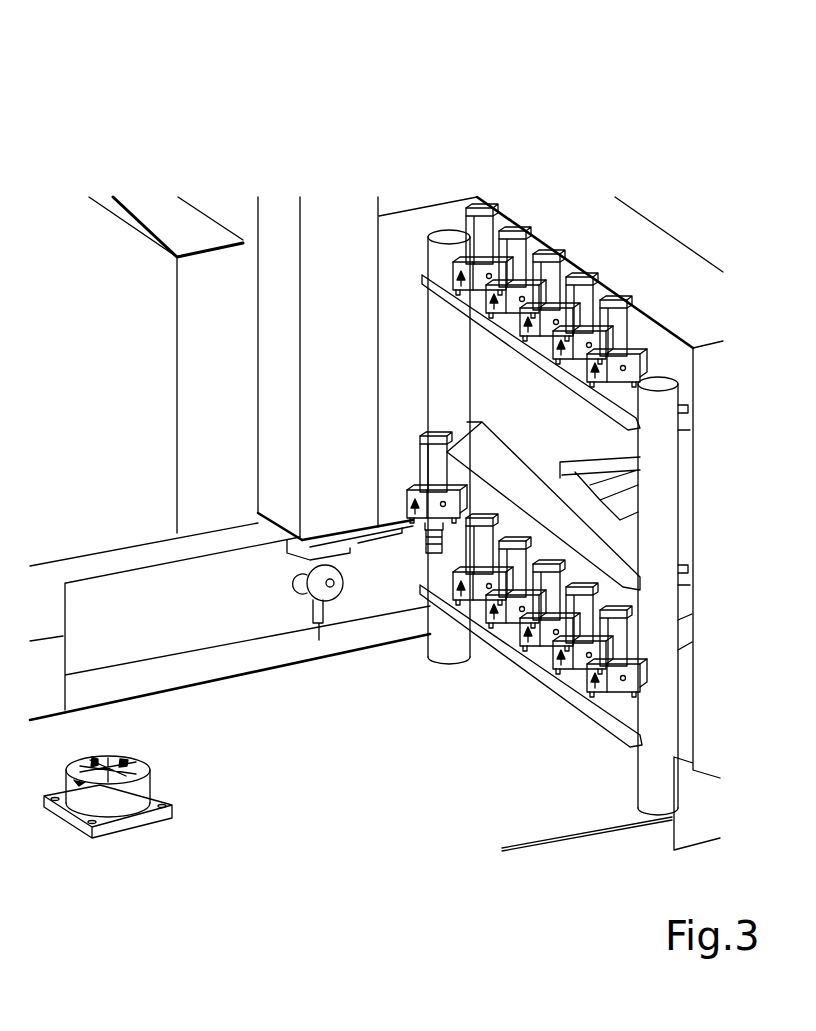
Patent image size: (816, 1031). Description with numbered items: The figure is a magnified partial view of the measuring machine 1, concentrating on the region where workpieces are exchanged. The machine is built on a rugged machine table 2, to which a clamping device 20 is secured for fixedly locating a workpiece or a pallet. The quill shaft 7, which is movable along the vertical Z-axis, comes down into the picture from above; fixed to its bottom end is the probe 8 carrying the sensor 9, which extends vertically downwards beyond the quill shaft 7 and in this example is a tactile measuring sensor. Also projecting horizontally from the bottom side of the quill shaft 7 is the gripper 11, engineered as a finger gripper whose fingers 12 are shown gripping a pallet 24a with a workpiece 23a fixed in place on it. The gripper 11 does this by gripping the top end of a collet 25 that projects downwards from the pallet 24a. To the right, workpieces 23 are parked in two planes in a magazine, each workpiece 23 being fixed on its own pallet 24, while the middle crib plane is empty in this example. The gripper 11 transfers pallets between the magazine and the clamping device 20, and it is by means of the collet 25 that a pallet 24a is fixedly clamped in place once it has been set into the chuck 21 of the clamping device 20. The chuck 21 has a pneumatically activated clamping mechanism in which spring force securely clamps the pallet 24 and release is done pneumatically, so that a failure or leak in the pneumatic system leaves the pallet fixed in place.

The measuring machine 1 is at (356, 86).
The machine table 2 is at (394, 760).
The quill shaft 7 is at (272, 388).
The probe 8 is at (280, 579).
The sensor 9 is at (318, 637).
The gripper 11 is at (372, 556).
The fingers 12 is at (393, 537).
The clamping device 20 is at (180, 780).
The chuck 21 is at (140, 765).
The workpieces 23 is at (582, 268).
The workpiece 23a is at (435, 463).
The pallet 24 is at (507, 343).
The pallet 24a is at (410, 510).
The collet 25 is at (430, 557).